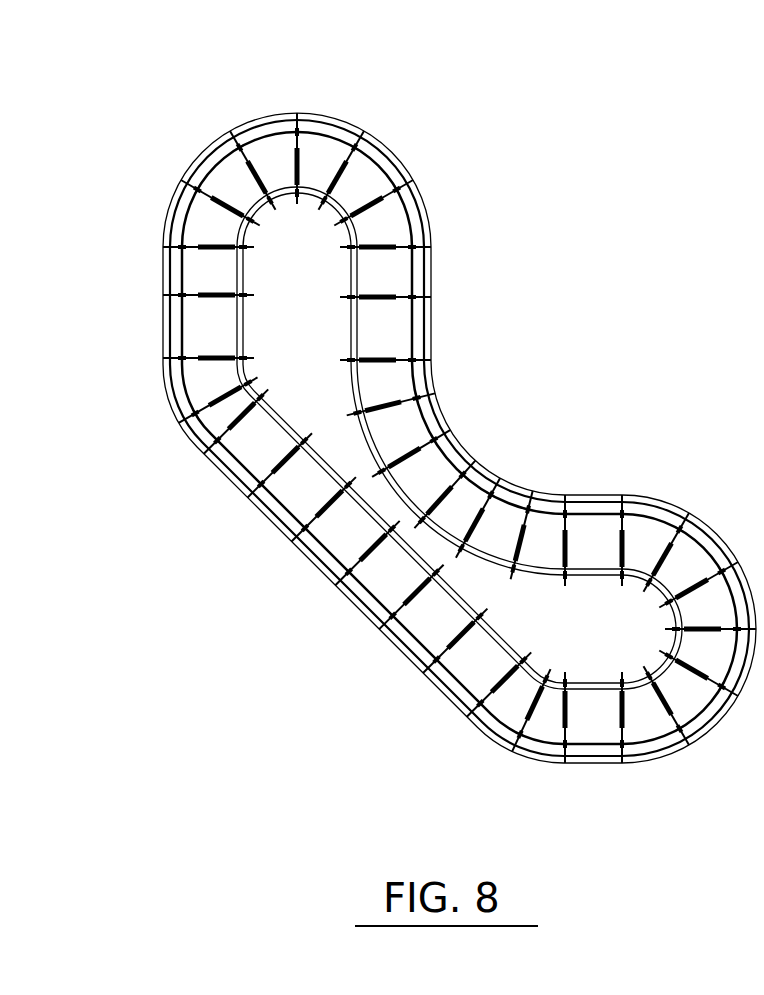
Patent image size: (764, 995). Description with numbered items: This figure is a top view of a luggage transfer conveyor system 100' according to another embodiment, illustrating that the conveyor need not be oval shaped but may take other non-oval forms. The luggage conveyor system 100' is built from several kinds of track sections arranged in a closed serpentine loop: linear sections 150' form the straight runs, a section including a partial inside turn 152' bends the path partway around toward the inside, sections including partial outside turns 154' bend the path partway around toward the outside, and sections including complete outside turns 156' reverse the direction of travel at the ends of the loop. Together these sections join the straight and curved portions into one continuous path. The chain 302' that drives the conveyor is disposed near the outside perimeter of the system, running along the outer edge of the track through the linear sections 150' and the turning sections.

The luggage conveyor system 100' is at (417, 448).
The linear sections 150' is at (417, 477).
The partial inside turn section 152' is at (495, 431).
The partial outside turn sections 154' is at (370, 530).
The complete outside turn sections 156' is at (297, 151).
The chain 302' is at (585, 466).